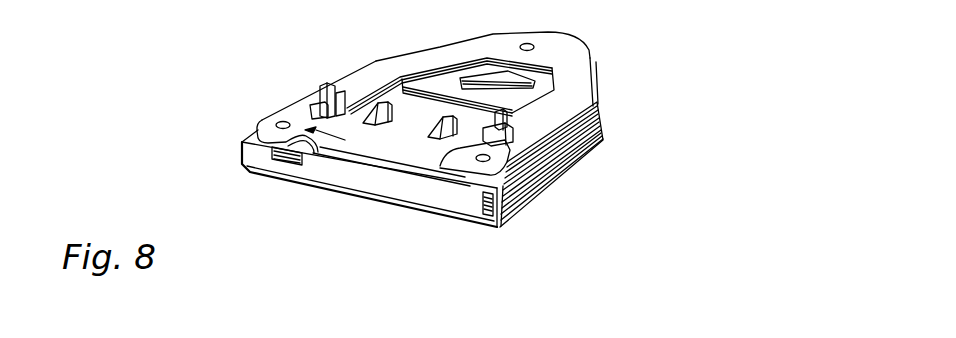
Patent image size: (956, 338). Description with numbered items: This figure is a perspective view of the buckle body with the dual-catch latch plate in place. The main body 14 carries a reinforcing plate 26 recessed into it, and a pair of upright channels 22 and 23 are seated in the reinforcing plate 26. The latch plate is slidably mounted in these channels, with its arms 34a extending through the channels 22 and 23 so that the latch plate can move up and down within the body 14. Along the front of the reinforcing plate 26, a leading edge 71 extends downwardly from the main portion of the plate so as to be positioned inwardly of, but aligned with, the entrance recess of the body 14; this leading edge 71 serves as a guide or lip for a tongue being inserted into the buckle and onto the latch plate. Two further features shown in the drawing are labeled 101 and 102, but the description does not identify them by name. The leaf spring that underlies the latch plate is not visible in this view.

The main body 14 is at (603, 140).
The upright channel 22 is at (313, 110).
The upright channel 23 is at (560, 155).
The reinforcing plate 26 is at (567, 53).
The arms 34a is at (507, 118).
The leading edge 71 is at (377, 173).
The first post 101 is at (363, 123).
The second post 102 is at (430, 137).